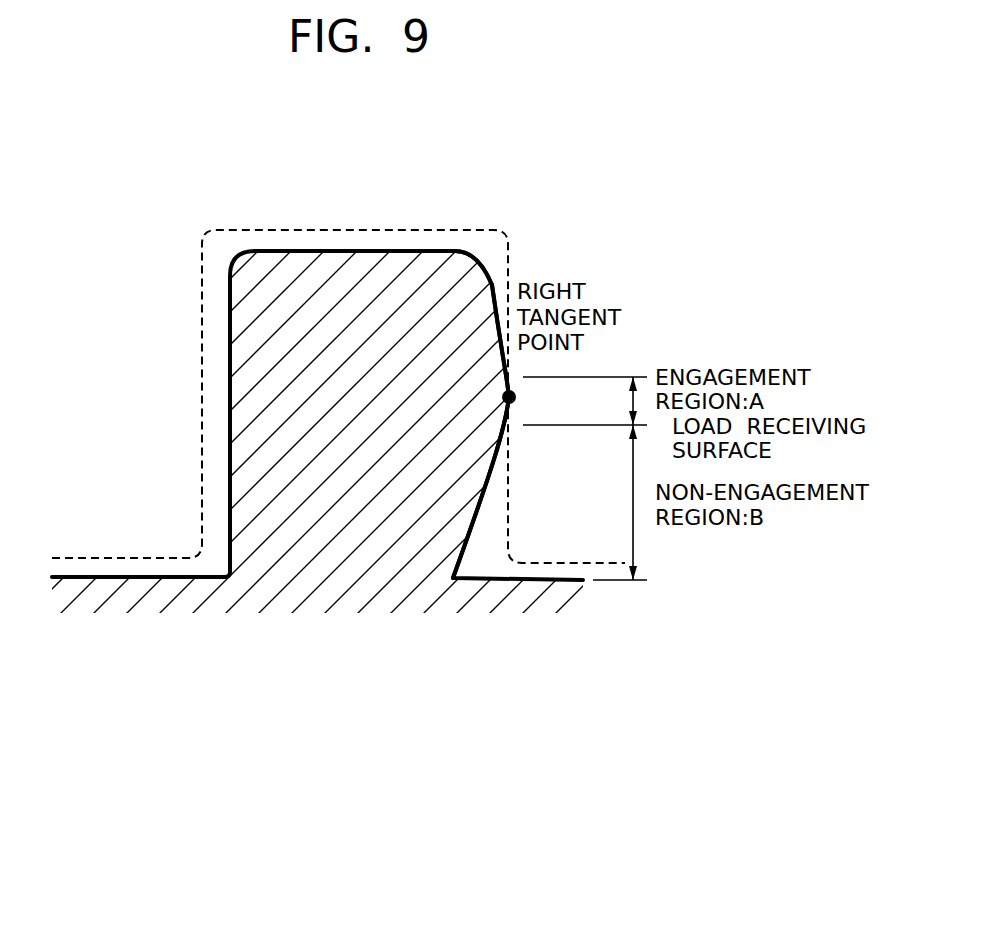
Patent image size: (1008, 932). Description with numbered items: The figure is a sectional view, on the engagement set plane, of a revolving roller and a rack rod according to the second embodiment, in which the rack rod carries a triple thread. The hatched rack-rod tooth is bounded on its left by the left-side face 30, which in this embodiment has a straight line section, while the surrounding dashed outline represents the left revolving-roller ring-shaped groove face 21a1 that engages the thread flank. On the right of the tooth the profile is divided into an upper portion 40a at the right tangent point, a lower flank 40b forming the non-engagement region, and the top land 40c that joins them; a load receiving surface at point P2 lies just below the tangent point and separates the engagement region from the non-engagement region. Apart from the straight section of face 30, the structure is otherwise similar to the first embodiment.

The left-side face of the rack rod 30 is at (230, 460).
The left revolving-roller ring-shaped groove face 21a1 is at (202, 323).
The engagement region tooth surface / right tangent point 40a is at (515, 397).
The non-engagement region tooth flank 40b is at (468, 538).
The tooth top surface 40c is at (492, 314).
The load receiving surface point P2 is at (525, 412).